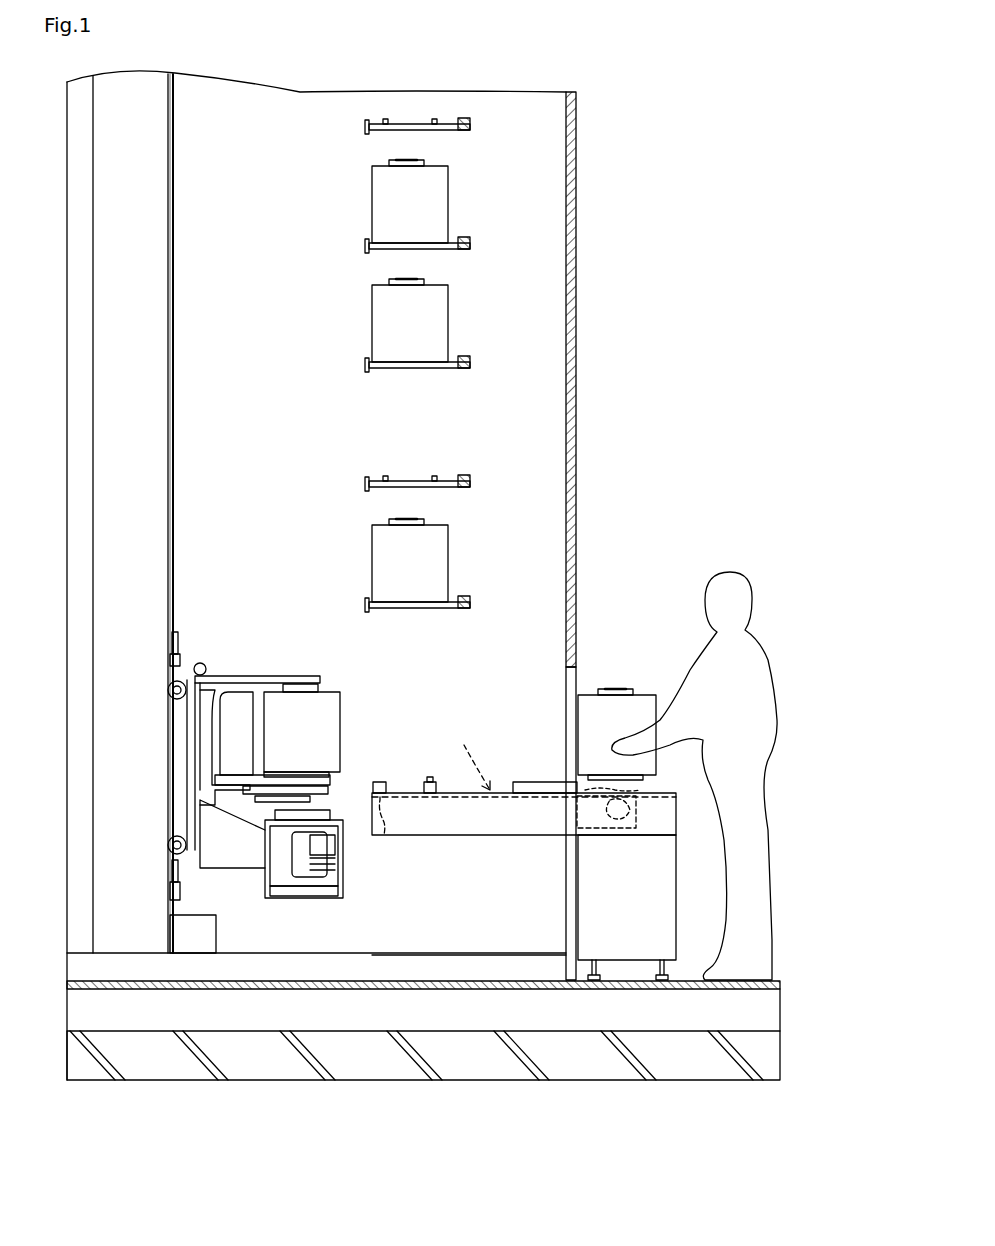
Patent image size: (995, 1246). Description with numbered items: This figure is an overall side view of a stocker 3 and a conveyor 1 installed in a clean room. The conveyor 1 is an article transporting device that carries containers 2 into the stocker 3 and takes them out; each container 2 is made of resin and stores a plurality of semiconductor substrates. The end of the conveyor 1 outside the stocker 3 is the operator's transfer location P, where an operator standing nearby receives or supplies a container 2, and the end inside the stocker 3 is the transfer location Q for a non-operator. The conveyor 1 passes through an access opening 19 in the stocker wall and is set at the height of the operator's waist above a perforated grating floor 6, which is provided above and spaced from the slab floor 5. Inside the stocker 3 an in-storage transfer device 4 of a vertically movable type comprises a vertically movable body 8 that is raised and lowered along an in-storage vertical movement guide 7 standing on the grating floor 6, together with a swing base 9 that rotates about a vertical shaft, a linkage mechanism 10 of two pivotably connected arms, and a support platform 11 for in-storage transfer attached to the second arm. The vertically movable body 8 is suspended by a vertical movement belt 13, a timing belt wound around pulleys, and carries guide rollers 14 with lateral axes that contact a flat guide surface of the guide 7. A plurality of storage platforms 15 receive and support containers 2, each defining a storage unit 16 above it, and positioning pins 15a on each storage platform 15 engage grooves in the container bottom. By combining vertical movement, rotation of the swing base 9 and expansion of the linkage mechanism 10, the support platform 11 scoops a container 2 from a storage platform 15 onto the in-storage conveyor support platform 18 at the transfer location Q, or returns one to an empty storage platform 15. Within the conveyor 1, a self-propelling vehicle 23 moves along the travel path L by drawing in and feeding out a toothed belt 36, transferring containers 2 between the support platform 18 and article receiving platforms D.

The conveyor 1 is at (466, 828).
The container 2 is at (440, 206).
The stocker 3 is at (590, 158).
The in-storage transfer device 4 is at (222, 660).
The slab floor 5 is at (265, 1040).
The grating floor 6 is at (440, 993).
The in-storage vertical movement guide 7 is at (150, 494).
The vertically movable body 8 is at (218, 862).
The swing base 9 is at (318, 810).
The linkage mechanism 10 is at (270, 780).
The support platform for in-storage transfer 11 is at (313, 778).
The vertical movement belt 13 is at (175, 353).
The guide rollers 14 is at (168, 700).
The storage platform 15 is at (443, 131).
The positioning pins 15a is at (434, 118).
The storage unit 16 is at (360, 210).
The in-storage conveyor support platform 18 is at (435, 790).
The access opening 19 is at (563, 735).
The self-propelling vehicle 23 is at (607, 828).
The toothed belt 36 is at (405, 840).
The article receiving platform D is at (540, 790).
The travel path L is at (472, 755).
The operator's transfer location P is at (625, 668).
The transfer location for a non-operator Q is at (400, 715).